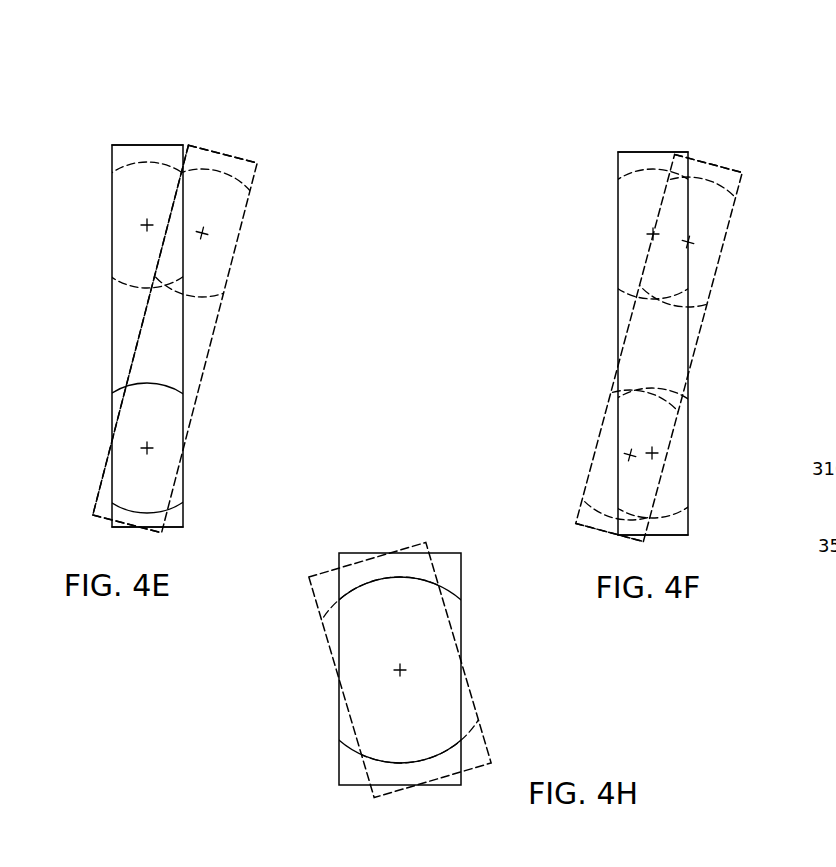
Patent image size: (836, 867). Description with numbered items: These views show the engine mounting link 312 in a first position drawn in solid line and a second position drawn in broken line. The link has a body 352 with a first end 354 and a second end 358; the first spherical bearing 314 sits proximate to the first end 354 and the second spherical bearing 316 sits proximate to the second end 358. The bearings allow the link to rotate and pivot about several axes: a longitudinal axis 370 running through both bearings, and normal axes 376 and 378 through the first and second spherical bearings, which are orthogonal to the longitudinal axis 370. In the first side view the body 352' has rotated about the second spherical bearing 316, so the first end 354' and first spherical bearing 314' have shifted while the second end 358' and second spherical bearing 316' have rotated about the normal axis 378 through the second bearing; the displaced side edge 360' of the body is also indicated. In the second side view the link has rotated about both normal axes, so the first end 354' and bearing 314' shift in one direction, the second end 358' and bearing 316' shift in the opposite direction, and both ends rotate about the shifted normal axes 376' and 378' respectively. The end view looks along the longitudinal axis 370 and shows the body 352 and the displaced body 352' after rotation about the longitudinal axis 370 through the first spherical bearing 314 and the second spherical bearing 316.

In FIG. 4E, the engine mounting link 312 is at (272, 131).
In FIG. 4F, the engine mounting link 312 is at (744, 133).
In FIG. 4H, the engine mounting link 312 is at (325, 696).
In FIG. 4E, the first spherical bearing 314 is at (134, 217).
In FIG. 4F, the first spherical bearing 314 is at (641, 226).
In FIG. 4H, the first spherical bearing 314 is at (430, 670).
In FIG. 4E, the first spherical bearing in second position 314' is at (226, 233).
In FIG. 4F, the first spherical bearing in second position 314' is at (714, 242).
In FIG. 4H, the first spherical bearing in second position 314' is at (447, 670).
In FIG. 4E, the second spherical bearing 316 is at (156, 448).
In FIG. 4F, the second spherical bearing 316 is at (660, 453).
In FIG. 4H, the second spherical bearing 316 is at (430, 670).
In FIG. 4F, the second spherical bearing in second position 316' is at (610, 455).
In FIG. 4H, the second spherical bearing in second position 316' is at (447, 670).
In FIG. 4E, the body 352 is at (116, 336).
In FIG. 4F, the body 352 is at (624, 343).
In FIG. 4H, the body 352 is at (407, 651).
In FIG. 4E, the body in second position 352' is at (186, 339).
In FIG. 4F, the body in second position 352' is at (668, 347).
In FIG. 4H, the body in second position 352' is at (400, 655).
In FIG. 4E, the first end 354 is at (147, 120).
In FIG. 4F, the first end 354 is at (653, 127).
In FIG. 4E, the first end in second position 354' is at (222, 140).
In FIG. 4F, the first end in second position 354' is at (736, 156).
In FIG. 4E, the second end 358 is at (164, 541).
In FIG. 4F, the second end 358 is at (664, 549).
In FIG. 4E, the second end in second position 358' is at (99, 529).
In FIG. 4F, the second end in second position 358' is at (595, 543).
In FIG. 4E, the side surface in rotated position 360' is at (112, 330).
In FIG. 4H, the longitudinal axis 370 is at (398, 667).
In FIG. 4E, the normal axis through first spherical bearing 376 is at (143, 204).
In FIG. 4F, the normal axis through first spherical bearing 376 is at (641, 210).
In FIG. 4E, the normal axis through first spherical bearing in second position 376' is at (212, 215).
In FIG. 4F, the normal axis through first spherical bearing in second position 376' is at (702, 223).
In FIG. 4E, the normal axis through second spherical bearing 378 is at (147, 427).
In FIG. 4F, the normal axis through second spherical bearing 378 is at (642, 432).
In FIG. 4F, the normal axis through second spherical bearing in second position 378' is at (635, 476).